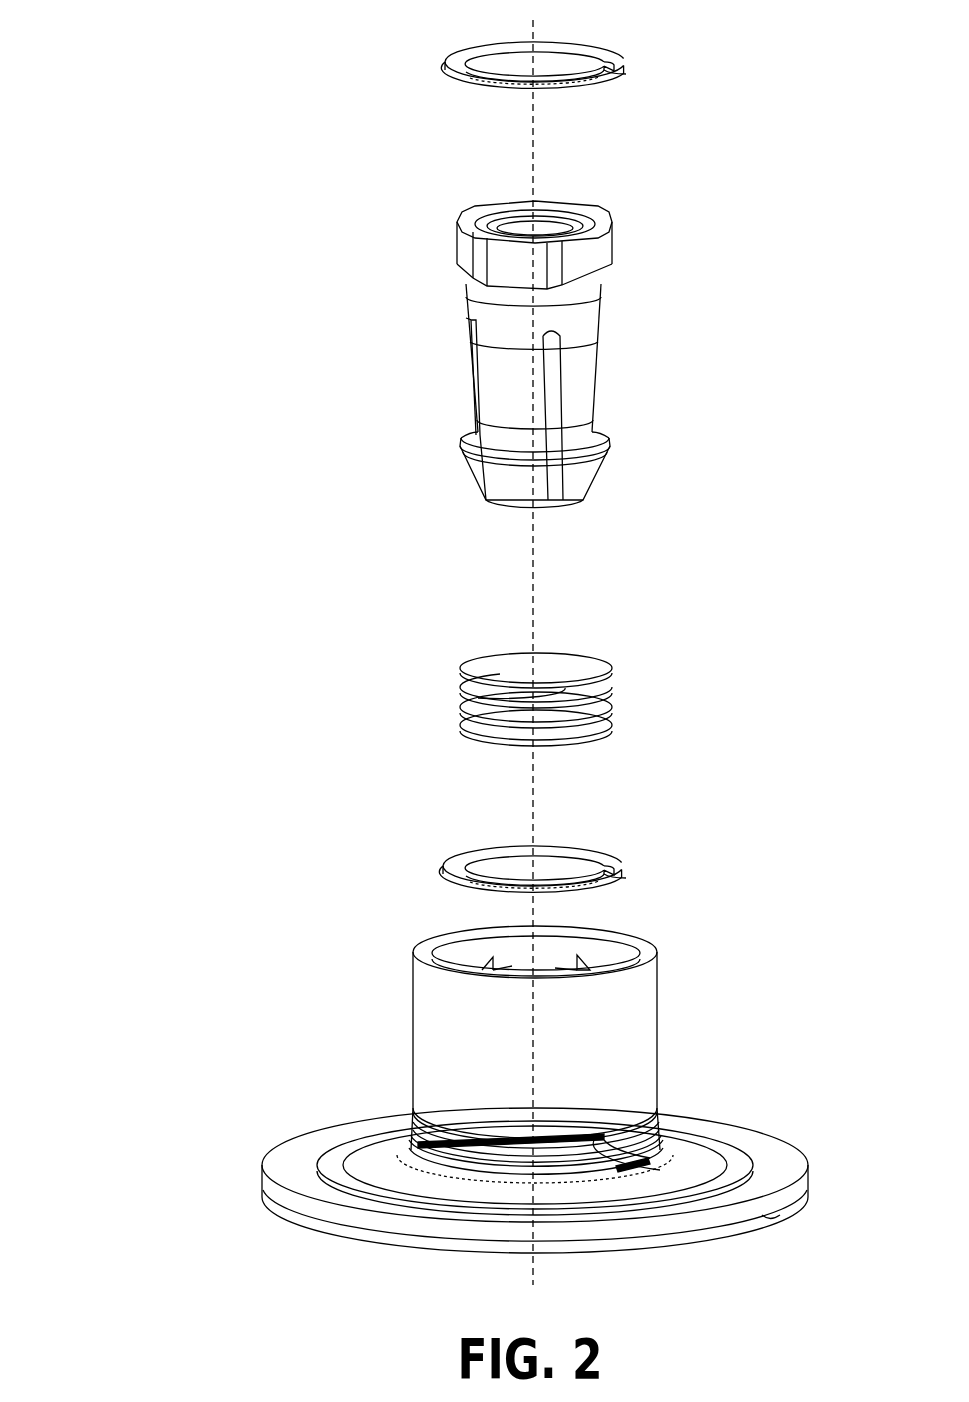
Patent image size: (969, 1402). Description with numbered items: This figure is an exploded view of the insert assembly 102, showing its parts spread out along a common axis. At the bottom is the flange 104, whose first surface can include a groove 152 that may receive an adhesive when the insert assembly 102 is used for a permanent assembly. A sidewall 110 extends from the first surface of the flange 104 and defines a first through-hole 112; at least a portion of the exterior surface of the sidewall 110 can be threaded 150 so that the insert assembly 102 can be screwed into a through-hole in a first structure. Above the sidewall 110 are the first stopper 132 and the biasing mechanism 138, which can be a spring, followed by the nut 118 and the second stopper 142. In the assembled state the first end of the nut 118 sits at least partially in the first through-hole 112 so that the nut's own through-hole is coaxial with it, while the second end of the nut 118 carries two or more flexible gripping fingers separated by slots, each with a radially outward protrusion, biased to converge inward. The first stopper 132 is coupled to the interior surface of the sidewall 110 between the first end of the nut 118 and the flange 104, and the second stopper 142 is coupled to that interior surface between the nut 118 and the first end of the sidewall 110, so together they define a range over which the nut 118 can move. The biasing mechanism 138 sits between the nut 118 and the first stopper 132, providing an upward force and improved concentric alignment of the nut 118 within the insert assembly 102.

The insert assembly 102 is at (118, 100).
The flange 104 is at (280, 1165).
The sidewall 110 is at (432, 1040).
The first through-hole 112 is at (512, 962).
The nut 118 is at (463, 305).
The first stopper 132 is at (452, 862).
The biasing mechanism 138 is at (462, 662).
The second stopper 142 is at (455, 58).
The threads 150 is at (676, 1148).
The groove 152 is at (333, 1152).